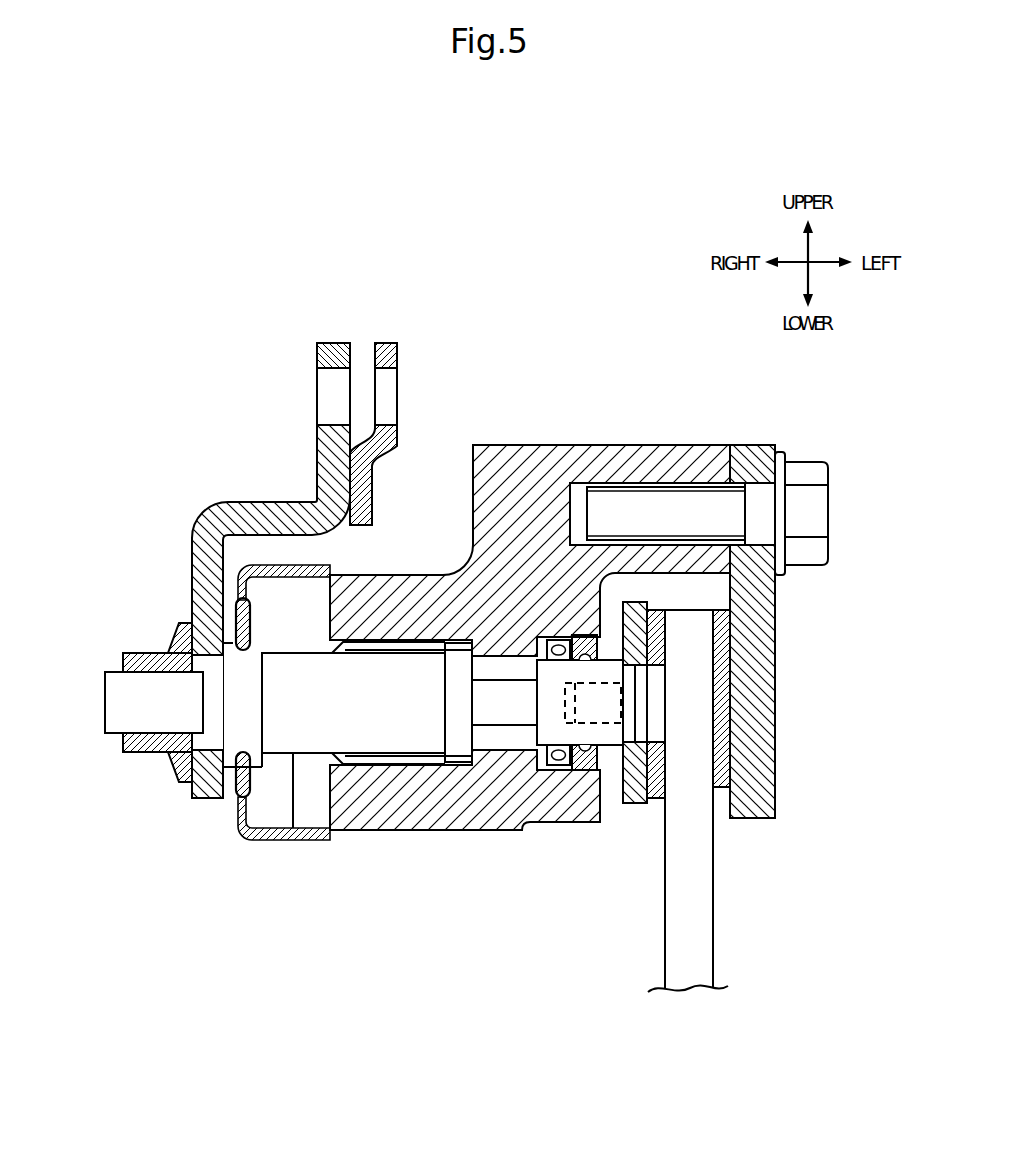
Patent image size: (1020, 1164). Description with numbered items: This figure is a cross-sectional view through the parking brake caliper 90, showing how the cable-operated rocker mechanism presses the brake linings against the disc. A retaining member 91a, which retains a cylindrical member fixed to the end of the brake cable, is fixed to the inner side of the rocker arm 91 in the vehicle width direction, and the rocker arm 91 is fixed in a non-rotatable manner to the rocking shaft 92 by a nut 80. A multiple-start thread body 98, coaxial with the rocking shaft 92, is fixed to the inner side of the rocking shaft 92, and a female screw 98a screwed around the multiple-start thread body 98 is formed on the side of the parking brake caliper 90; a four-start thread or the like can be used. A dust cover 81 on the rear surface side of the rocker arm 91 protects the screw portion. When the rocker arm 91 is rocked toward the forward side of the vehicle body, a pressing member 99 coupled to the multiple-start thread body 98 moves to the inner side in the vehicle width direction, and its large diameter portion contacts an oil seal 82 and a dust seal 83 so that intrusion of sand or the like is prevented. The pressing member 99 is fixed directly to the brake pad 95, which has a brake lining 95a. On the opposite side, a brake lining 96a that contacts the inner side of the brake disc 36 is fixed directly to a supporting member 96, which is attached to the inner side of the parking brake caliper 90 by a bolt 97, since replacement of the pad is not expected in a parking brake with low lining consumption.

The parking brake caliper 90 is at (628, 440).
The rocker arm 91 is at (305, 462).
The retaining member 91a is at (366, 485).
The rocking shaft 92 is at (118, 702).
The nut 80 is at (144, 756).
The dust cover 81 is at (266, 841).
The multiple-start thread body 98 is at (380, 738).
The female screw 98a is at (423, 757).
The pressing member 99 is at (500, 706).
The oil seal 82 is at (556, 768).
The dust seal 83 is at (582, 770).
The brake pad 95 is at (635, 808).
The brake lining 95a is at (656, 797).
The brake disc 36 is at (700, 912).
The supporting member 96 is at (765, 625).
The brake lining 96a is at (718, 788).
The bolt 97 is at (818, 512).